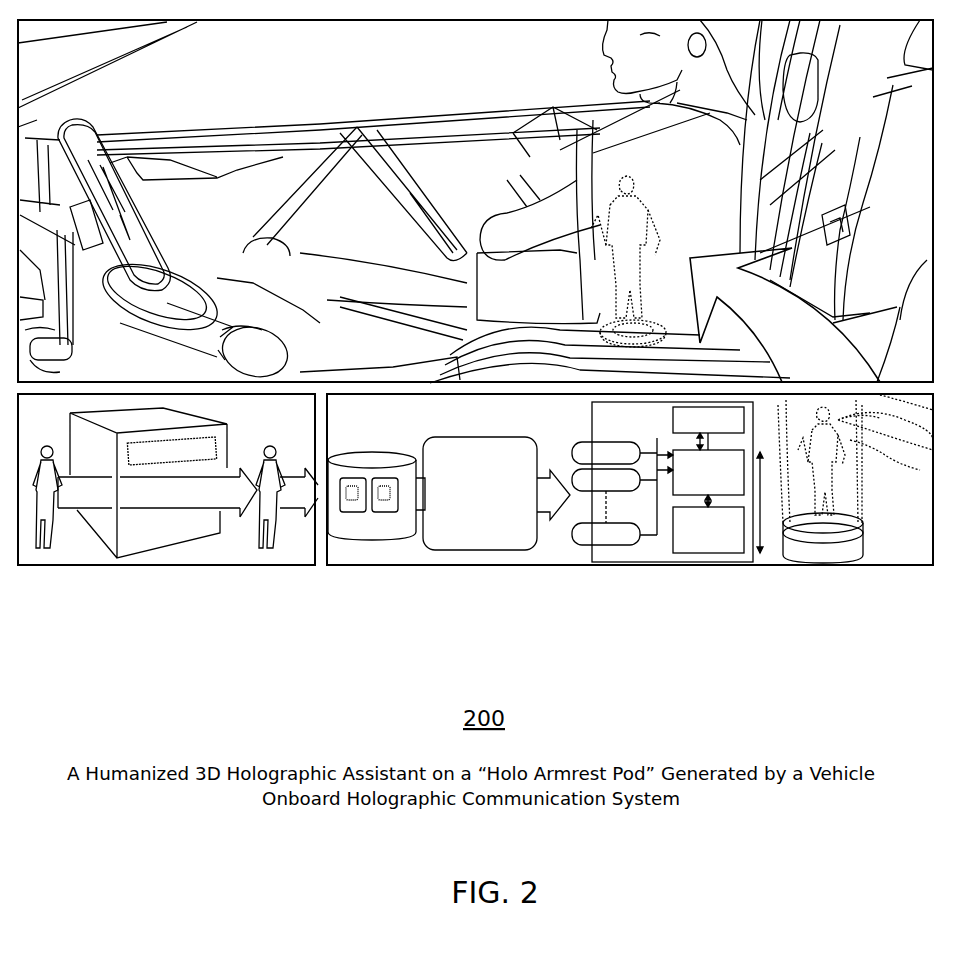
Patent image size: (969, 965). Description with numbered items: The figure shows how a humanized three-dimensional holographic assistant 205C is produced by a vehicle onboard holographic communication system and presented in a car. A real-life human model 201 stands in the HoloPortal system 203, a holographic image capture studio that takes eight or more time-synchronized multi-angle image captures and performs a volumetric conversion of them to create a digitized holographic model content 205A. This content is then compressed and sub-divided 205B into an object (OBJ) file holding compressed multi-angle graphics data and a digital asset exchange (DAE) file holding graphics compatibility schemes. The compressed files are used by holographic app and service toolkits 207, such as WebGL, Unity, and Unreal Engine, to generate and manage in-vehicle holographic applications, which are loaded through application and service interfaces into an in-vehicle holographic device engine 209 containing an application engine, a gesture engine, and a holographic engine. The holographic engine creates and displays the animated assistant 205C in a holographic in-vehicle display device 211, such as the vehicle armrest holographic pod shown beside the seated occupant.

The real-life human model 201 is at (48, 548).
The HoloPortal system 203 is at (152, 536).
The digitized holographic model content 205A is at (264, 548).
The compressed and sub-divided holographic model content files 205B is at (369, 540).
The humanized three-dimensional holographic assistant 205C is at (835, 493).
The holographic app and service toolkits 207 is at (480, 540).
The in-vehicle holographic device engine 209 is at (650, 545).
The holographic in-vehicle display device 211 is at (817, 550).